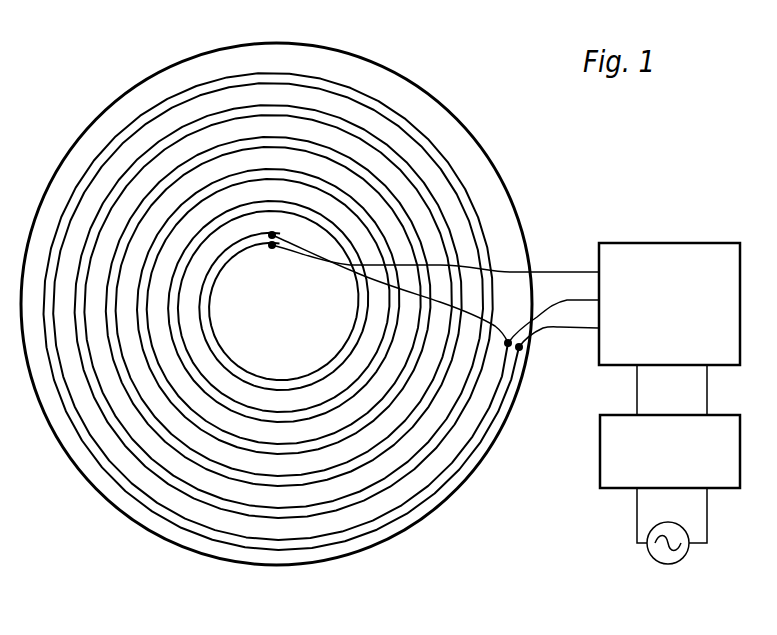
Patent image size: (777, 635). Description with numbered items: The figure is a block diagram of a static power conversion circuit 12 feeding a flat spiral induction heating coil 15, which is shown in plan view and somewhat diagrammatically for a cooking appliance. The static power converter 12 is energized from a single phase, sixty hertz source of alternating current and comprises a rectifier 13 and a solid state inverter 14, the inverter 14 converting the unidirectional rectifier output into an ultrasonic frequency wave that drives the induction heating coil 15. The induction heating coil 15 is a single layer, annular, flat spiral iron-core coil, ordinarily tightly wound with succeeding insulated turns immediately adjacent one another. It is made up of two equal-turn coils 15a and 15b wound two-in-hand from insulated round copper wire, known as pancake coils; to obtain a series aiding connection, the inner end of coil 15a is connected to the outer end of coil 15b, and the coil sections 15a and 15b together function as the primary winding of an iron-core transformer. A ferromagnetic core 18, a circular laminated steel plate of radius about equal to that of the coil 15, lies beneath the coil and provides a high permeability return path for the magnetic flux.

The static power conversion circuit 12 is at (592, 391).
The rectifier 13 is at (600, 478).
The solid state inverter 14 is at (703, 243).
The induction heating coil 15 is at (308, 311).
The coil 15a is at (477, 253).
The coil 15b is at (488, 233).
The ferromagnetic core 18 is at (493, 163).